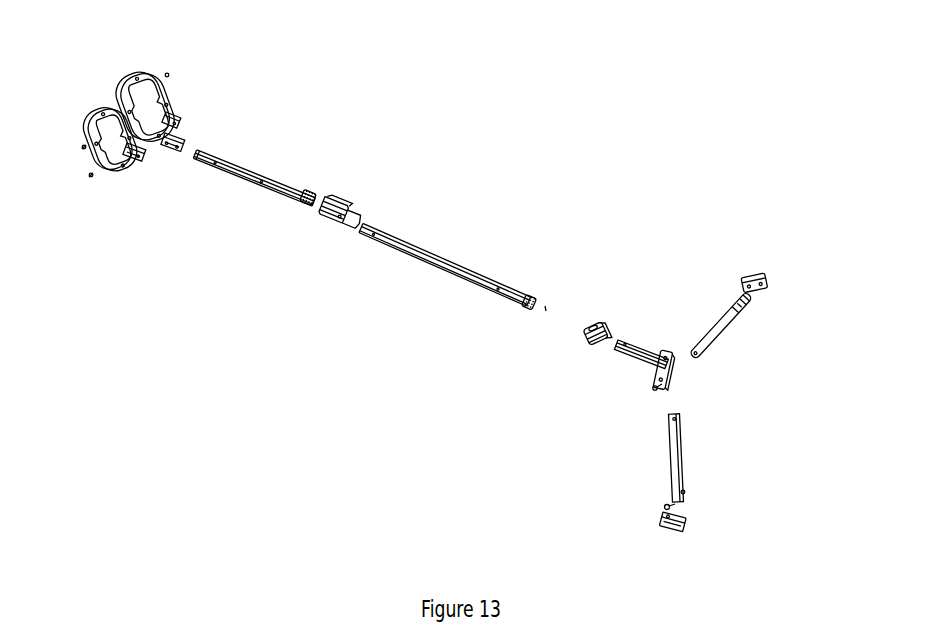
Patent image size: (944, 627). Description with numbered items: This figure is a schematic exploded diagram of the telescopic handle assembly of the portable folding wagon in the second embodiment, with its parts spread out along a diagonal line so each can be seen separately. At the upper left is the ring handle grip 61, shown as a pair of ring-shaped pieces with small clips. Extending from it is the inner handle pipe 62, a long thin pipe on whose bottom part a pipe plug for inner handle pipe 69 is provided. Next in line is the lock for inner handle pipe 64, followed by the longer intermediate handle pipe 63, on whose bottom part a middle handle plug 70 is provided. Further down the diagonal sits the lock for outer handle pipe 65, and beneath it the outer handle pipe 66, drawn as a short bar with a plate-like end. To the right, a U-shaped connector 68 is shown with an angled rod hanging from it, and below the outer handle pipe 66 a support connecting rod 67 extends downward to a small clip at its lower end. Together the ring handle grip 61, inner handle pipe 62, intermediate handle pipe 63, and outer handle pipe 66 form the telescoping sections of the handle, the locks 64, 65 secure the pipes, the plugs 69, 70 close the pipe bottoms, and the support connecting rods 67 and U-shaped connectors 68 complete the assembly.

The ring handle grip 61 is at (173, 96).
The inner handle pipe 62 is at (258, 171).
The intermediate handle pipe 63 is at (448, 262).
The lock for inner handle pipe 64 is at (350, 205).
The lock for outer handle pipe 65 is at (606, 321).
The outer handle pipe 66 is at (632, 371).
The support connecting rod 67 is at (684, 466).
The U-shaped connector 68 is at (767, 284).
The pipe plug for inner handle pipe 69 is at (315, 189).
The middle handle plug 70 is at (541, 298).